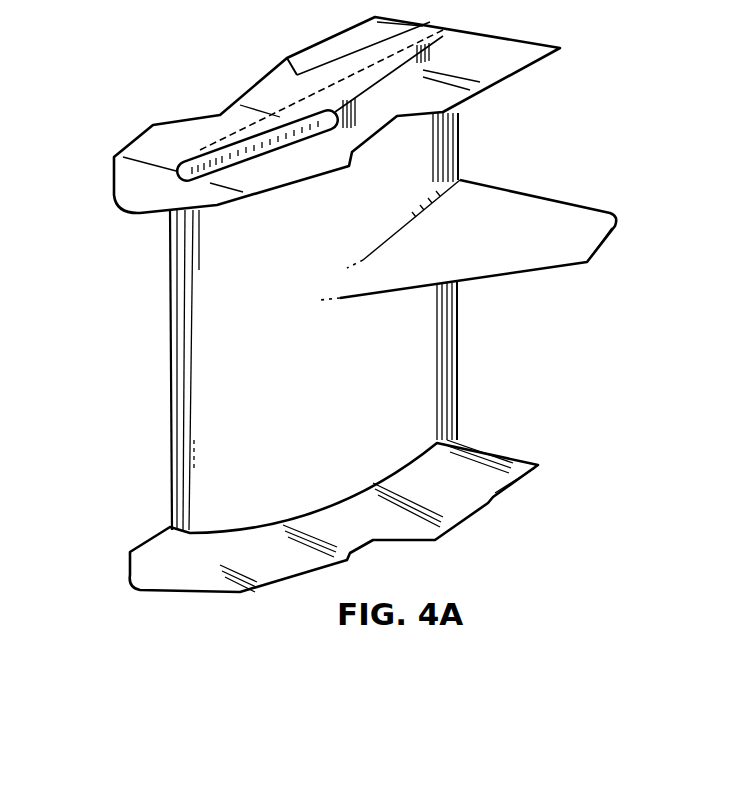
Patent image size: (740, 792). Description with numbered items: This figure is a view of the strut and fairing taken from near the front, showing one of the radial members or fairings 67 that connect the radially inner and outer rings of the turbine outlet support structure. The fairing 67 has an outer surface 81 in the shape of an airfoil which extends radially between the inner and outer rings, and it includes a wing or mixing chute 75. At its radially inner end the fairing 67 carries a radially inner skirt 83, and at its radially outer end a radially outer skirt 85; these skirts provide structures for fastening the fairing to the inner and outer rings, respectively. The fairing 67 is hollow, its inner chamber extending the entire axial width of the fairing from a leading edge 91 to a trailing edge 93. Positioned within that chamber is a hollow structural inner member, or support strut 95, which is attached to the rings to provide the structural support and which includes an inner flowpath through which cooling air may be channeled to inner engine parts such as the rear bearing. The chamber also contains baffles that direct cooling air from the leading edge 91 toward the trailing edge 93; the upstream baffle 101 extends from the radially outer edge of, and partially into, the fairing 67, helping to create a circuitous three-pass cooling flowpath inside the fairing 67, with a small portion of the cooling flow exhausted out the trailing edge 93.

The fairing 67 is at (172, 325).
The wing or mixing chute 75 is at (538, 207).
The outer surface 81 is at (425, 365).
The radially inner skirt 83 is at (460, 497).
The radially outer skirt 85 is at (503, 67).
The leading edge 91 is at (173, 425).
The trailing edge 93 is at (458, 143).
The support strut 95 is at (297, 147).
The upstream baffle 101 is at (357, 93).